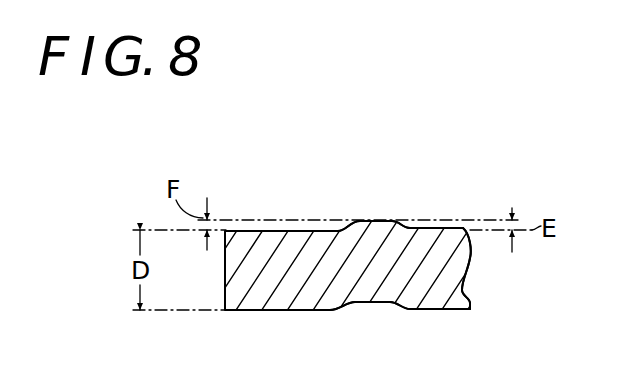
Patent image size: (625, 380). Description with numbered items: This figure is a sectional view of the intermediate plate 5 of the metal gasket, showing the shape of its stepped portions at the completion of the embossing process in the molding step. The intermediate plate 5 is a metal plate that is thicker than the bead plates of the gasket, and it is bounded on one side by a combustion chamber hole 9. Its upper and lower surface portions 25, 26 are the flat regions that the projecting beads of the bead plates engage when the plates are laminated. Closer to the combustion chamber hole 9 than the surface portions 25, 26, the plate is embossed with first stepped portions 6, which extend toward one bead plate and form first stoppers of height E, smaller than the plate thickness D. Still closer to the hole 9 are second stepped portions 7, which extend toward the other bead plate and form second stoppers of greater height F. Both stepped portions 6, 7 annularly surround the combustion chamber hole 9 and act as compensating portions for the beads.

The intermediate plate 5 is at (464, 226).
The first stepped portions 6 is at (406, 224).
The second stepped portions 7 is at (342, 228).
The combustion chamber holes 9 is at (225, 272).
The surface portion 25 is at (432, 224).
The surface portion 26 is at (443, 311).